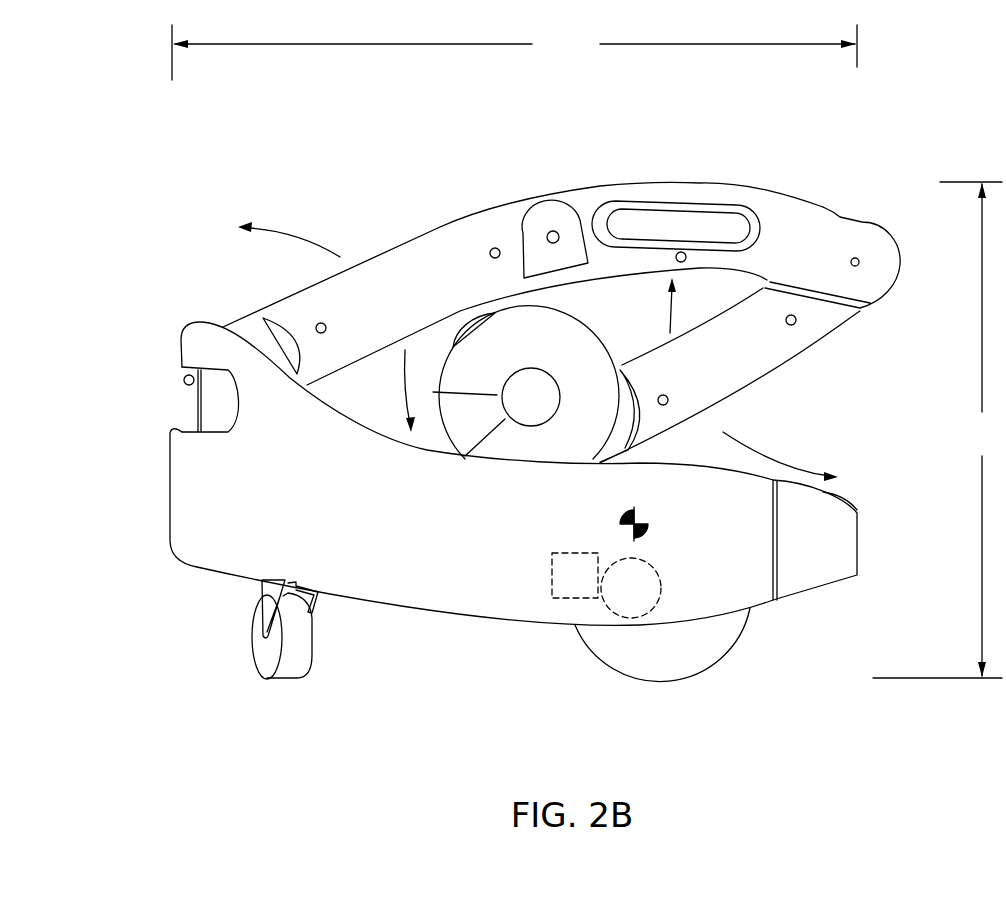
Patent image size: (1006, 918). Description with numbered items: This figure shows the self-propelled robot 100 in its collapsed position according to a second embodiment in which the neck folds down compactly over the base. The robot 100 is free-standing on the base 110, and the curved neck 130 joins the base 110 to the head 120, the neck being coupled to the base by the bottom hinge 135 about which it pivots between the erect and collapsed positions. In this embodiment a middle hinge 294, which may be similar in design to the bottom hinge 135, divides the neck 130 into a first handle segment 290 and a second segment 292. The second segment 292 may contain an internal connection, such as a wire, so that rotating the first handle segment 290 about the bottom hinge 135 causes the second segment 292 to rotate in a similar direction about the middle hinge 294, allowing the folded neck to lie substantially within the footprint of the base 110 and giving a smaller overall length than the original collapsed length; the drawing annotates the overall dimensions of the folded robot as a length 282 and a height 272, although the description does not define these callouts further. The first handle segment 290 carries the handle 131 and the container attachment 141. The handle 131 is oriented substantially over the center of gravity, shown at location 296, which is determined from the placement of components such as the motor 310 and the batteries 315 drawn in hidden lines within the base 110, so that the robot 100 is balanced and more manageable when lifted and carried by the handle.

The self-propelled robot 100 is at (876, 110).
The base 110 is at (423, 577).
The head 120 is at (515, 350).
The curved neck 130 is at (718, 133).
The handle 131 is at (648, 203).
The bottom hinge 135 is at (184, 380).
The container attachment 141 is at (553, 230).
The height dimension 272 is at (939, 430).
The length dimension 282 is at (514, 52).
The first handle segment 290 is at (425, 255).
The second segment 292 is at (757, 373).
The middle hinge 294 is at (858, 258).
The center of gravity 296 is at (637, 517).
The motor 310 is at (660, 584).
The batteries 315 is at (552, 567).